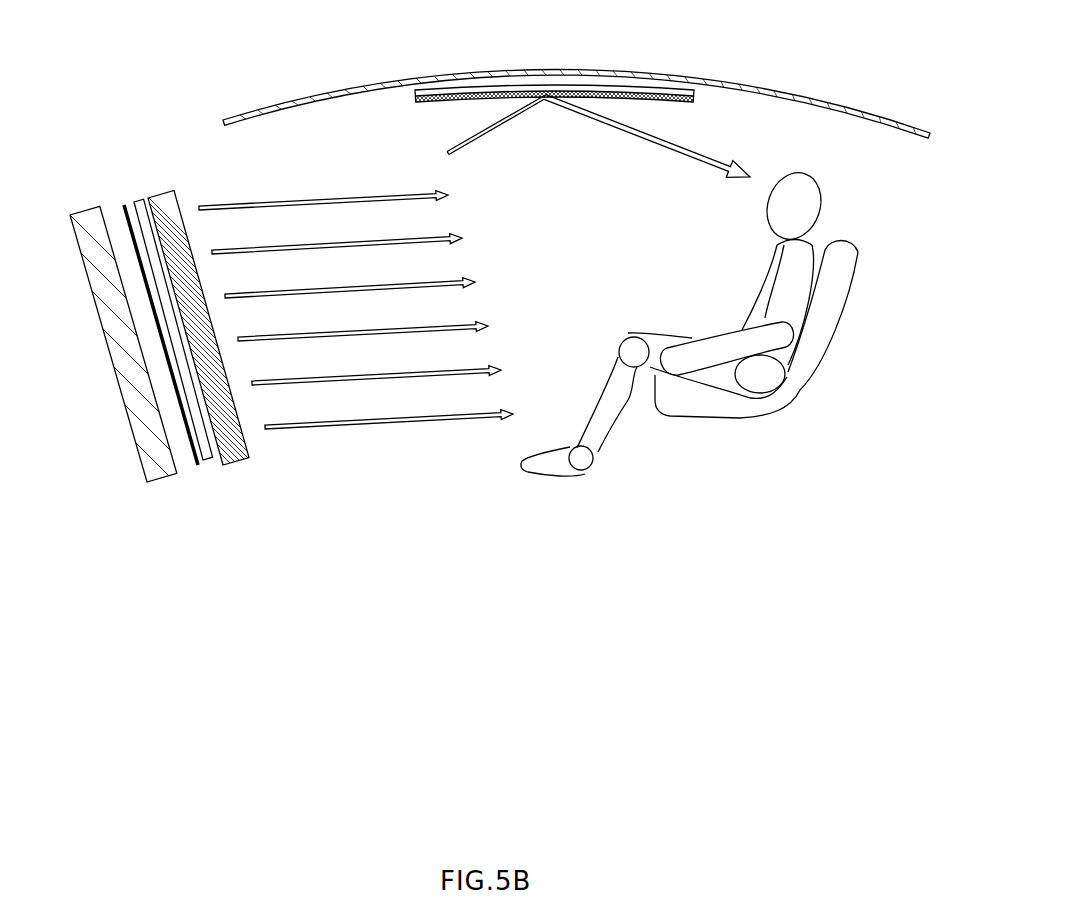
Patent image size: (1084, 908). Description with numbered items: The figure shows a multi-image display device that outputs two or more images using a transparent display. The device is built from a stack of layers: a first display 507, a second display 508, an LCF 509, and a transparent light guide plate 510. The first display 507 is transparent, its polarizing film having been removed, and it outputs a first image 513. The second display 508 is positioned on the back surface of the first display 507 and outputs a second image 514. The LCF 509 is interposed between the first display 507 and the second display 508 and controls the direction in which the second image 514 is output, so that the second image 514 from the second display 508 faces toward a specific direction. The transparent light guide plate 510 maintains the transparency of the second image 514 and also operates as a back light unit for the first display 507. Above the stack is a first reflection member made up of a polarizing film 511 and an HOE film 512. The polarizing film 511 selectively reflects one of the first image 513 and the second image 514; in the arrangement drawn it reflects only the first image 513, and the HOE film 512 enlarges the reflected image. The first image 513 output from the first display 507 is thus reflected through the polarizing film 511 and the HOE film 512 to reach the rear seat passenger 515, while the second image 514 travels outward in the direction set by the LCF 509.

The first display 507 is at (168, 198).
The second display 508 is at (80, 215).
The LCF 509 is at (197, 465).
The transparent light guide plate 510 is at (140, 202).
The polarizing film 511 is at (427, 103).
The HOE film 512 is at (675, 77).
The first image 513 is at (700, 207).
The second image 514 is at (518, 288).
The rear seat passenger 515 is at (712, 423).